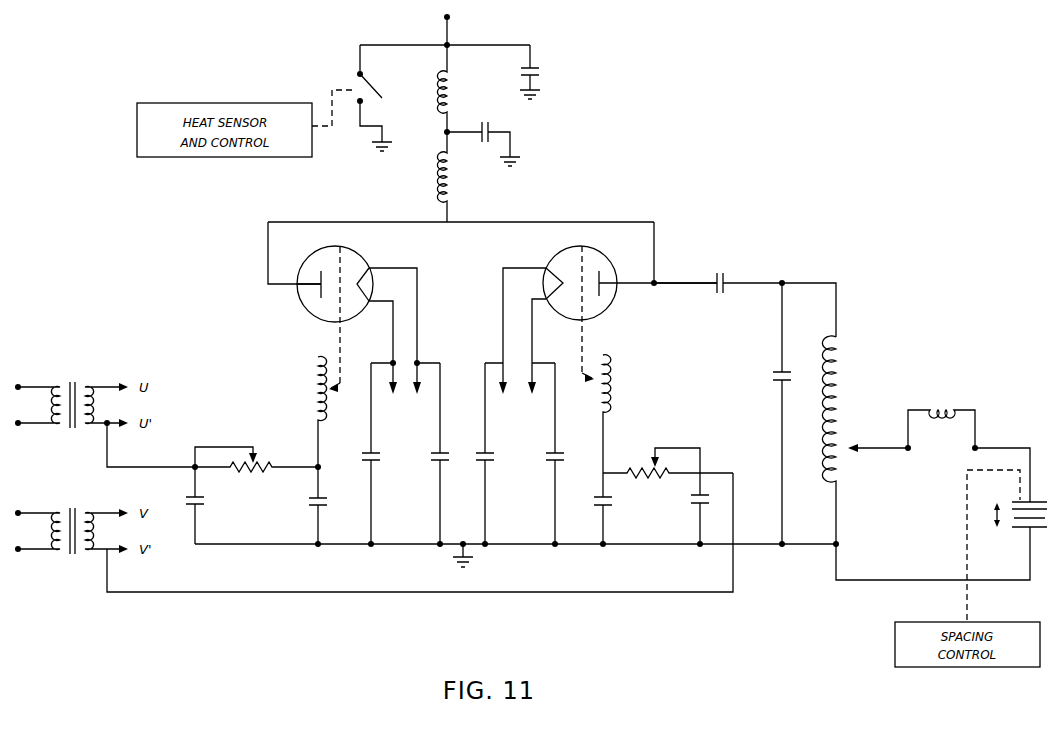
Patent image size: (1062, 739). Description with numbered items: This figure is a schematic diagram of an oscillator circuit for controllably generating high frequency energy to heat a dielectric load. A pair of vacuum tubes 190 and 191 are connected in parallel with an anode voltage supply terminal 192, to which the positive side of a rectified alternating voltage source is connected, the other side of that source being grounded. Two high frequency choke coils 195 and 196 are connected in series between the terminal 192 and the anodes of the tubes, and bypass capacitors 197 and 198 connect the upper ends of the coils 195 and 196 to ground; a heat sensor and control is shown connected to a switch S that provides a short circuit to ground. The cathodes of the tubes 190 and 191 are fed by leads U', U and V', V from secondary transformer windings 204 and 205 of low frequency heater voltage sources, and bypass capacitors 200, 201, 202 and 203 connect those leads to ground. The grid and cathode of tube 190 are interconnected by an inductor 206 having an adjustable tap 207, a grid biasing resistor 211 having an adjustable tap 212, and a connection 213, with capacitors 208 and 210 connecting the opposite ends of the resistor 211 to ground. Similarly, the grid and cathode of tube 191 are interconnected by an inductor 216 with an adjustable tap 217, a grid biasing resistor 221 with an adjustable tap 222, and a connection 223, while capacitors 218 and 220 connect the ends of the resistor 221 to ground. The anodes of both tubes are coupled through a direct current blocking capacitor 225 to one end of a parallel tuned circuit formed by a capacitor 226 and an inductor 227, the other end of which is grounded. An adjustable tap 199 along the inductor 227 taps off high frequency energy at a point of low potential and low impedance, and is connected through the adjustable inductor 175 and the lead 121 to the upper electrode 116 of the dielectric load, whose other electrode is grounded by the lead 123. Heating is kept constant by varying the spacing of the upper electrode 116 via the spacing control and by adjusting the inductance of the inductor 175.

The anode voltage supply terminal 192 is at (452, 17).
The high frequency choke coil 195 is at (437, 88).
The high frequency choke coil 196 is at (438, 173).
The bypass capacitor 197 is at (540, 62).
The bypass capacitor 198 is at (486, 119).
The switch S is at (385, 91).
The vacuum tube 190 is at (398, 248).
The vacuum tube 191 is at (543, 257).
The bypass capacitor 200 is at (376, 450).
The bypass capacitor 201 is at (436, 470).
The bypass capacitor 202 is at (490, 450).
The bypass capacitor 203 is at (550, 466).
The secondary transformer winding 204 is at (83, 383).
The secondary transformer winding 205 is at (83, 510).
The inductor 206 is at (306, 386).
The adjustable tap 207 is at (336, 394).
The capacitor 208 is at (305, 510).
The capacitor 210 is at (188, 498).
The grid biasing resistor 211 is at (252, 477).
The adjustable tap 212 is at (259, 452).
The connection 213 is at (148, 463).
The inductor 216 is at (619, 382).
The adjustable tap 217 is at (586, 386).
The capacitor 218 is at (612, 512).
The capacitor 220 is at (720, 497).
The grid biasing resistor 221 is at (652, 478).
The adjustable tap 222 is at (652, 448).
The connection 223 is at (447, 594).
The direct current blocking capacitor 225 is at (726, 270).
The capacitor 226 is at (776, 385).
The inductor 227 is at (847, 392).
The adjustable tap 199 is at (885, 455).
The adjustable inductor 175 is at (940, 405).
The lead 121 is at (1001, 447).
The upper electrode 116 is at (1010, 501).
The lead 123 is at (940, 577).